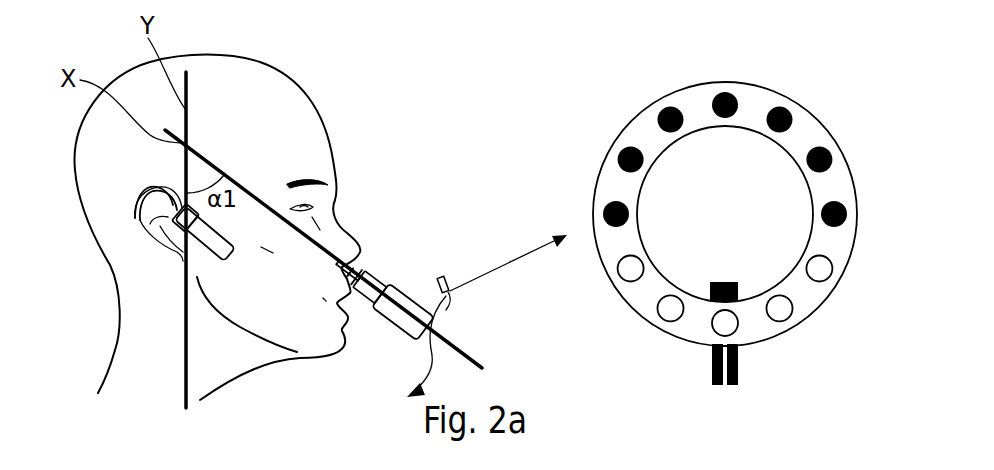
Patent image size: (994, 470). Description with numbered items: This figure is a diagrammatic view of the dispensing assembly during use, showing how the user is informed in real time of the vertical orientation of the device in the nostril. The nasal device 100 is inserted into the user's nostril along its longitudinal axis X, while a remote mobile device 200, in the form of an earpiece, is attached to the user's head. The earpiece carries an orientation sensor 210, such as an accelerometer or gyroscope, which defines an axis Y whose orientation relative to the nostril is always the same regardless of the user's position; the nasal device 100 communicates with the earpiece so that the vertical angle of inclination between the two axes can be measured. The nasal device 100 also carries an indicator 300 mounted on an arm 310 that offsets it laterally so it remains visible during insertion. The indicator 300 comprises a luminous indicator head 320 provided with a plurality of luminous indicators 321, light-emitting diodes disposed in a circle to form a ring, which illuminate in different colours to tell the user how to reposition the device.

The nasal device 100 is at (400, 270).
The remote mobile device 200 is at (192, 262).
The orientation sensor 210 is at (170, 232).
The indicator 300 is at (462, 310).
The arm 310 is at (710, 372).
The luminous indicator head 320 is at (448, 268).
The luminous indicators 321 is at (782, 314).